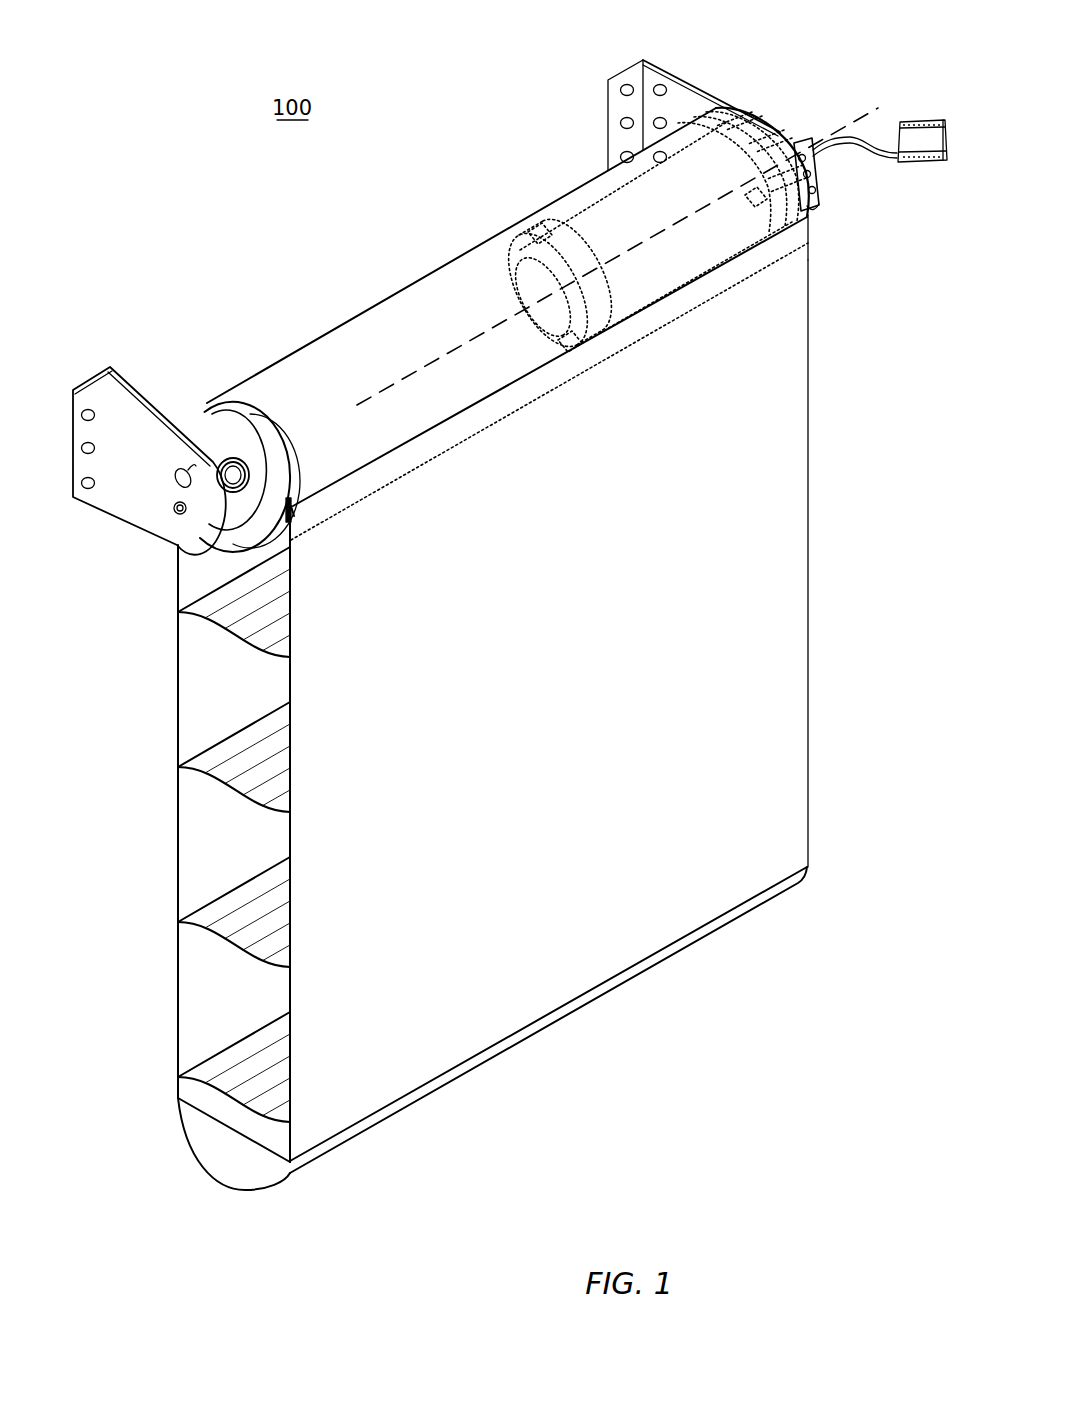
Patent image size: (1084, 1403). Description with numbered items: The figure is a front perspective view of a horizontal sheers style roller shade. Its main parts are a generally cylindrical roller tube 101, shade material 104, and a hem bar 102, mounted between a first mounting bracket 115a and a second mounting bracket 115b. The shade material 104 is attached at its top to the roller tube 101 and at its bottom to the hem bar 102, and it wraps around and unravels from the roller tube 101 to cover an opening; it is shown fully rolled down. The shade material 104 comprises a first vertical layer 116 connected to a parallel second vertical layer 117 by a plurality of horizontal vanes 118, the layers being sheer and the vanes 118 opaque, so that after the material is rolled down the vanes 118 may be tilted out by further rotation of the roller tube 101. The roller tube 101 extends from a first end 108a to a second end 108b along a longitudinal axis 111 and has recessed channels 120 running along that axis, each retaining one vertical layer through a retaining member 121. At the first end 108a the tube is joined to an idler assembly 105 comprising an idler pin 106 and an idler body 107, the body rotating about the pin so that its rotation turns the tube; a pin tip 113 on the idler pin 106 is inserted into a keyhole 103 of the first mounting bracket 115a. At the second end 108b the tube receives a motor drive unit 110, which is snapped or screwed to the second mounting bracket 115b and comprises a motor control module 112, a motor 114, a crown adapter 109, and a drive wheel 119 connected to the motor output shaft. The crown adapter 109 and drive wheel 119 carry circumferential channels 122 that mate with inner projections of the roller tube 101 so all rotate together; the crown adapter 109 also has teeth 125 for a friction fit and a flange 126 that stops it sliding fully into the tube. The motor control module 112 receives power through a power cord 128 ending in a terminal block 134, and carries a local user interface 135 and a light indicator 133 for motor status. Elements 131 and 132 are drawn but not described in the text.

The roller tube 101 is at (507, 307).
The hem bar 102 is at (230, 1162).
The keyhole 103 is at (173, 482).
The shade material 104 is at (808, 398).
The idler assembly 105 is at (215, 418).
The idler pin 106 is at (229, 483).
The idler body 107 is at (208, 435).
The first end 108a is at (252, 451).
The second end 108b is at (801, 150).
The crown adapter 109 is at (722, 143).
The motor drive unit 110 is at (590, 203).
The longitudinal axis 111 is at (855, 118).
The motor control module 112 is at (858, 140).
The pin tip 113 is at (173, 505).
The motor 114 is at (673, 267).
The first mounting bracket 115a is at (135, 433).
The second mounting bracket 115b is at (623, 68).
The first vertical layer 116 is at (593, 694).
The second vertical layer 117 is at (190, 831).
The horizontal vanes 118 is at (247, 733).
The drive wheel 119 is at (643, 289).
The recessed channel 120 is at (289, 498).
The retaining member 121 is at (293, 512).
The channels 122 is at (547, 240).
The teeth 125 is at (773, 147).
The flange 126 is at (747, 127).
The power cord 128 is at (853, 142).
The shade top edge 131 is at (808, 233).
The bottom corner 132 is at (807, 867).
The light indicator 133 is at (800, 155).
The terminal block 134 is at (915, 122).
The local user interface 135 is at (815, 195).